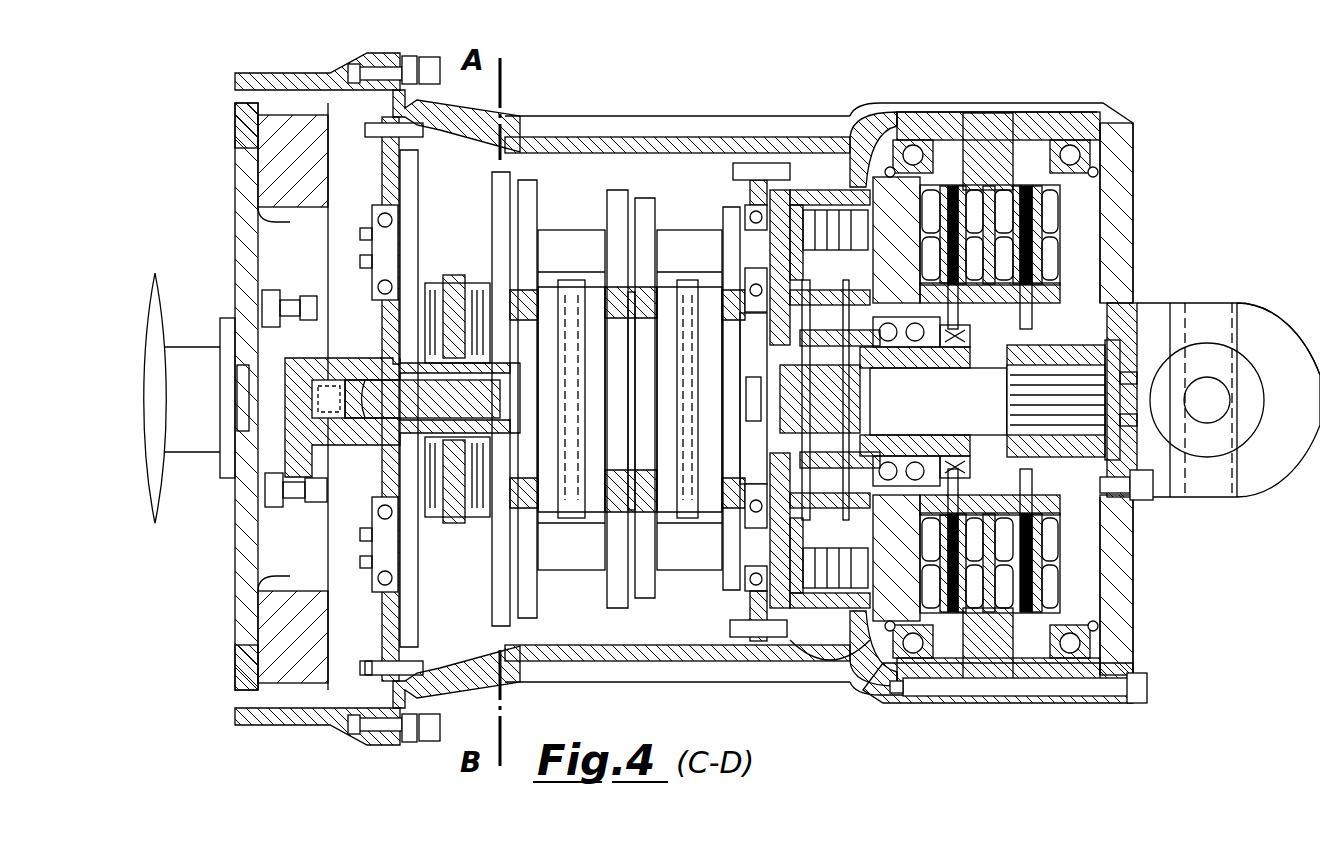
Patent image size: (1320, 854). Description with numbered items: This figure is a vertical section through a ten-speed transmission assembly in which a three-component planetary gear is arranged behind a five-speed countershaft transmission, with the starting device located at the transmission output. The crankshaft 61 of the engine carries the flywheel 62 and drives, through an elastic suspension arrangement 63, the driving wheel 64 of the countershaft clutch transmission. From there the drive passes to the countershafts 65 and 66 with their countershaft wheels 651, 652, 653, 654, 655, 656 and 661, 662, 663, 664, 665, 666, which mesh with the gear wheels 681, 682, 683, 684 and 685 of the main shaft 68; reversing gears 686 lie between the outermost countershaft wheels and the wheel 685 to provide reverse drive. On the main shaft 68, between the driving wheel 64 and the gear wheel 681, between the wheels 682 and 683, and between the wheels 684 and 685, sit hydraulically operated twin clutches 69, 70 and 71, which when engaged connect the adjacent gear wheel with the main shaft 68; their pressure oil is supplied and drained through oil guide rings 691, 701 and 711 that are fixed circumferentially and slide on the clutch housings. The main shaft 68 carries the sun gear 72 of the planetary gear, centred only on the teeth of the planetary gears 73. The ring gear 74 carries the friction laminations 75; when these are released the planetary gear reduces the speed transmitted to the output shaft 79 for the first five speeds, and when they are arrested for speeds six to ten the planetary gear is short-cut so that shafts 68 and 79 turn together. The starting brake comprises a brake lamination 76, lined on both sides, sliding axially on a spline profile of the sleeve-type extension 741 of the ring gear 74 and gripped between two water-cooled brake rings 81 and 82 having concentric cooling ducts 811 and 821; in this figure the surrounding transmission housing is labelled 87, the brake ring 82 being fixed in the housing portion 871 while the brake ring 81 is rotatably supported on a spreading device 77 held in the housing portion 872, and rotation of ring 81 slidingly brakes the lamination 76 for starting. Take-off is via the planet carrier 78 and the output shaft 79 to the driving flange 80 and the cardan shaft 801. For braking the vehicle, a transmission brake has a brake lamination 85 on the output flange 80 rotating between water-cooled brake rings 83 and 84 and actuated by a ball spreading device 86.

The crankshaft 61 is at (200, 440).
The flywheel 62 is at (262, 631).
The elastic suspension arrangement 63 is at (278, 480).
The driving wheel 64 is at (393, 360).
The countershaft 65 is at (407, 632).
The countershaft wheel 651 is at (387, 627).
The countershaft wheel 652 is at (495, 592).
The countershaft wheel 653 is at (530, 593).
The countershaft wheel 654 is at (598, 595).
The countershaft wheel 655 is at (653, 580).
The countershaft wheel 656 is at (720, 583).
The countershaft 66 is at (435, 247).
The countershaft wheel 661 is at (410, 170).
The countershaft wheel 662 is at (495, 197).
The countershaft wheel 663 is at (532, 207).
The countershaft wheel 664 is at (610, 213).
The countershaft wheel 665 is at (650, 217).
The countershaft wheel 666 is at (730, 228).
The main shaft 68 is at (337, 400).
The gear wheel 681 is at (500, 450).
The gear wheel 682 is at (573, 455).
The gear wheel 683 is at (617, 355).
The gear wheel 684 is at (690, 460).
The gear wheel 685 is at (727, 343).
The reversing gears 686 is at (733, 497).
The twin clutch 69 is at (497, 480).
The oil guide ring 691 is at (473, 273).
The twin clutch 70 is at (550, 505).
The oil guide ring 701 is at (593, 253).
The twin clutch 71 is at (667, 505).
The oil guide ring 711 is at (705, 258).
The sun gear 72 is at (822, 452).
The planetary gears 73 is at (812, 235).
The ring gear 74 is at (830, 240).
The sleeve-type extension 741 is at (913, 447).
The friction laminations 75 is at (840, 240).
The brake lamination 76 is at (955, 187).
The spreading device 77 is at (913, 155).
The planet carrier 78 is at (835, 485).
The output shaft 79 is at (965, 395).
The driving flange 80 is at (1123, 300).
The cardan shaft 801 is at (1283, 345).
The brake ring 81 is at (930, 187).
The cooling duct 811 is at (920, 600).
The brake ring 82 is at (993, 150).
The cooling duct 821 is at (973, 600).
The brake ring 83 is at (997, 613).
The brake ring 84 is at (1050, 657).
The brake lamination 85 is at (1027, 190).
The ball spreading device 86 is at (1070, 155).
The housing 87 is at (628, 148).
The housing 871 is at (998, 150).
The housing 872 is at (870, 150).